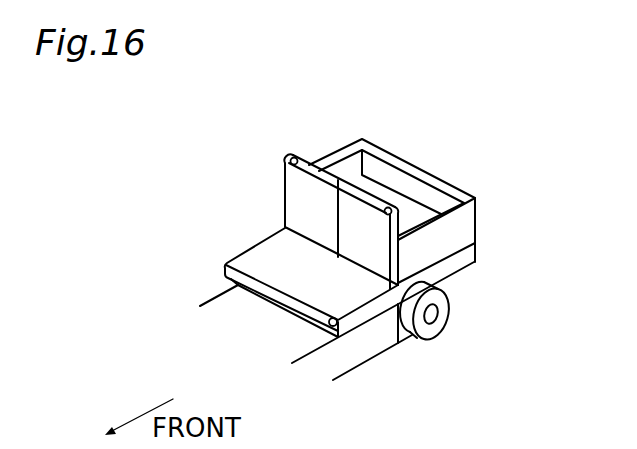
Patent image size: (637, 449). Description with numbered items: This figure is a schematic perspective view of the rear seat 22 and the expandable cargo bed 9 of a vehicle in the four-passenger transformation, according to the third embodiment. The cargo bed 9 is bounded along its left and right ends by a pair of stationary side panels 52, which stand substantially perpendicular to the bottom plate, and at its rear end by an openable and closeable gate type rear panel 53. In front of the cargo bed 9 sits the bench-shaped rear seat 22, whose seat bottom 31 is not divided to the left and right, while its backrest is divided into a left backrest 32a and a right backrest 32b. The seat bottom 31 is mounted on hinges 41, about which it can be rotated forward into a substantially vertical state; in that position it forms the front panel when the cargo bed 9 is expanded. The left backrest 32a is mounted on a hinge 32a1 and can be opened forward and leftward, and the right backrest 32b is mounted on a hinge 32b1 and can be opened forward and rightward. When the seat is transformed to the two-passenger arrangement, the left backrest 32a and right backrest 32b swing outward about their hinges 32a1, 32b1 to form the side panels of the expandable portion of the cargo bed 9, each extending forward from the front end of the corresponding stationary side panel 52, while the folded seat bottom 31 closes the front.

The expandable cargo bed 9 is at (410, 157).
The rear seat 22 is at (207, 218).
The seat bottom 31 is at (257, 255).
The left backrest 32a is at (367, 253).
The hinge 32a1 is at (394, 213).
The right backrest 32b is at (292, 197).
The hinge 32b1 is at (300, 159).
The hinges 41 is at (340, 324).
The stationary side panels 52 is at (447, 230).
The gate type rear panel 53 is at (417, 187).